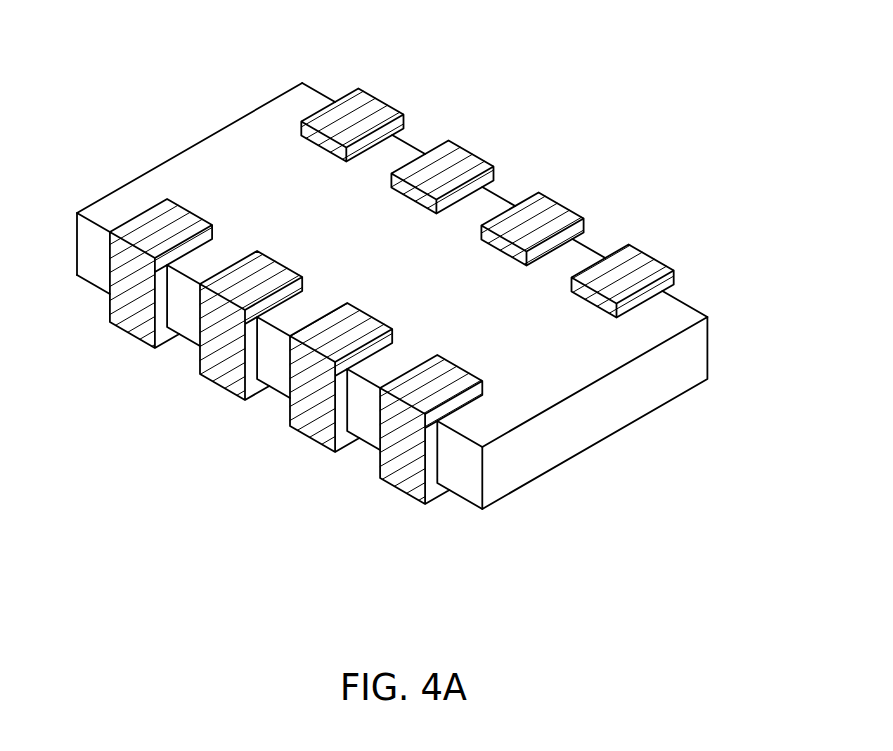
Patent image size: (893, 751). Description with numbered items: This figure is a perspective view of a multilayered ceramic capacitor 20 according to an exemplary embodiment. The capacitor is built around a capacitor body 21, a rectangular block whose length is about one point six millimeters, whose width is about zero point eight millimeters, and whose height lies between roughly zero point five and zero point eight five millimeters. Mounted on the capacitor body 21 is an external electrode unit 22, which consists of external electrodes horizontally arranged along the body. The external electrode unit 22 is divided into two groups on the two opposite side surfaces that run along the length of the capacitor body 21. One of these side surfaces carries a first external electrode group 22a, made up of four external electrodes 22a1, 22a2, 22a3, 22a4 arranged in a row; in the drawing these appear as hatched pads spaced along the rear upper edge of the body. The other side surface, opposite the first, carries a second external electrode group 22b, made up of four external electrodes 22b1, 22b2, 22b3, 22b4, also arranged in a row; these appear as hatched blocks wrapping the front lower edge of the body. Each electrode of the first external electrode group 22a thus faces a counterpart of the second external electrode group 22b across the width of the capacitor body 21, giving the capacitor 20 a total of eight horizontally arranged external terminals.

The multilayered ceramic capacitor 20 is at (412, 314).
The capacitor body 21 is at (555, 357).
The external electrode unit 22 is at (685, 76).
The first external electrode group 22a is at (453, 7).
The external electrode 22a1 is at (377, 108).
The external electrode 22a2 is at (476, 156).
The external electrode 22a3 is at (566, 210).
The external electrode 22a4 is at (654, 260).
The second external electrode group 22b is at (303, 557).
The external electrode 22b1 is at (125, 328).
The external electrode 22b2 is at (212, 376).
The external electrode 22b3 is at (303, 428).
The external electrode 22b4 is at (395, 482).